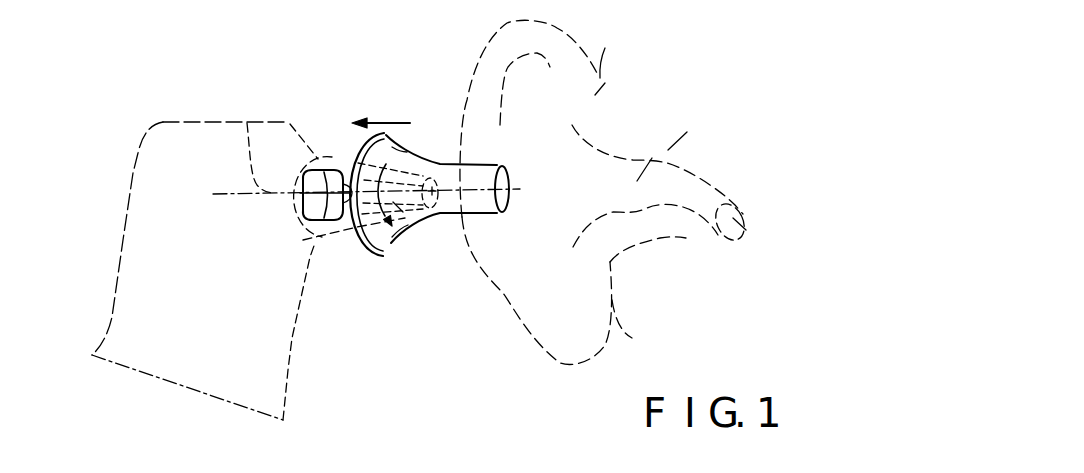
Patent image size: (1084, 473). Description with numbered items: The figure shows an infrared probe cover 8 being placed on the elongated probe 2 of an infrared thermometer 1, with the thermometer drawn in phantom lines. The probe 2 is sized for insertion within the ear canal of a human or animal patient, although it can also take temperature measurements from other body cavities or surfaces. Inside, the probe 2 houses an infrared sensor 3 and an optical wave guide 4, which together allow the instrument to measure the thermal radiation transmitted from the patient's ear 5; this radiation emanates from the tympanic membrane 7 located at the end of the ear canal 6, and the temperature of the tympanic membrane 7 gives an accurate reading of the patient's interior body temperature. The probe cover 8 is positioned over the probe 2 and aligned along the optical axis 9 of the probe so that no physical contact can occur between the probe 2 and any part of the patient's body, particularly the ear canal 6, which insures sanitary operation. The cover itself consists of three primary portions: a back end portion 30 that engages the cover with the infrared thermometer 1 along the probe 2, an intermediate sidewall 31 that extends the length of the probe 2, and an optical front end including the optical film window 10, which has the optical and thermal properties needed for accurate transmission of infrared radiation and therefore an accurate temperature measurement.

The infrared thermometer 1 is at (165, 152).
The elongated probe 2 is at (337, 237).
The infrared sensor 3 is at (324, 212).
The optical wave guide 4 is at (405, 250).
The patient's ear 5 is at (690, 150).
The ear canal 6 is at (675, 143).
The tympanic membrane 7 is at (742, 243).
The infrared probe cover 8 is at (445, 145).
The optical axis 9 is at (247, 123).
The optical film window 10 is at (508, 208).
The back end portion 30 is at (387, 257).
The intermediate sidewall 31 is at (435, 222).